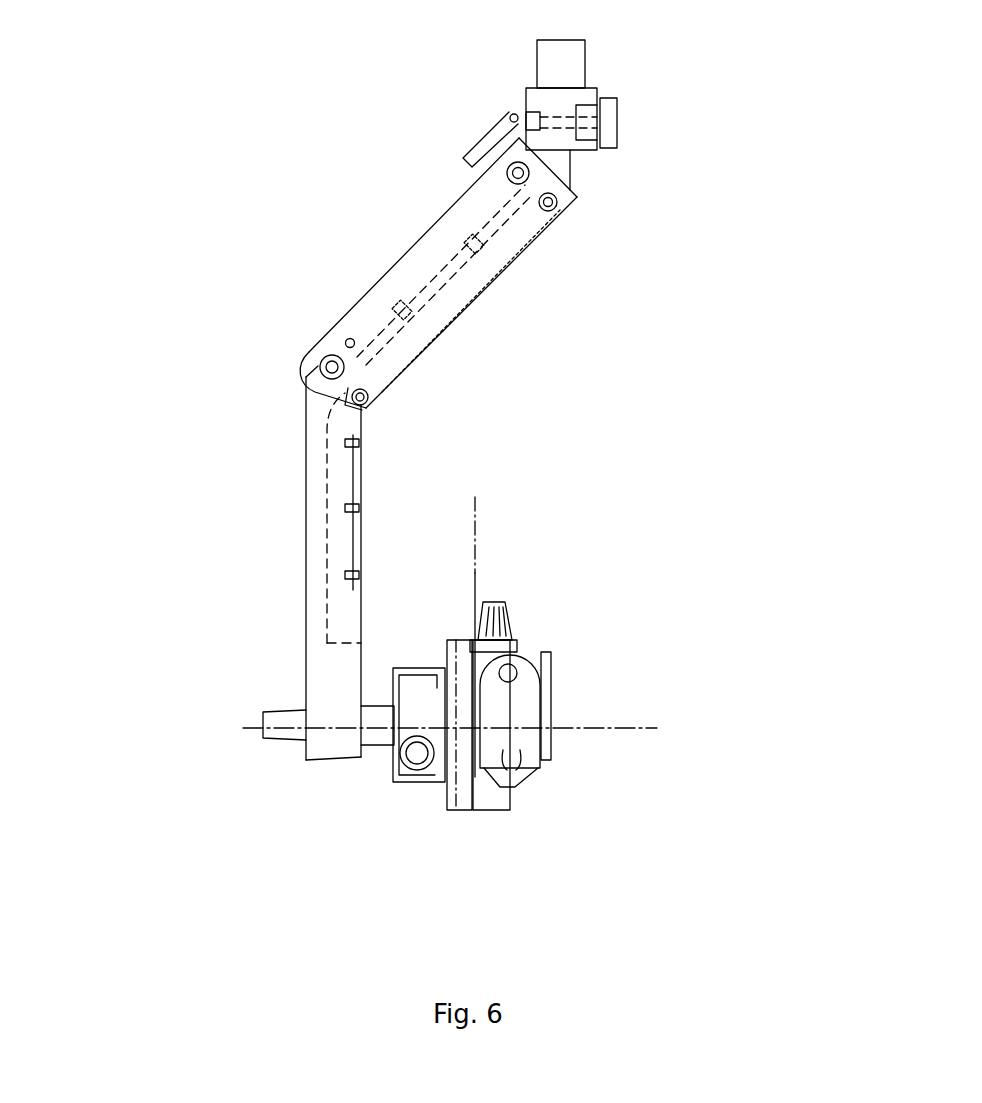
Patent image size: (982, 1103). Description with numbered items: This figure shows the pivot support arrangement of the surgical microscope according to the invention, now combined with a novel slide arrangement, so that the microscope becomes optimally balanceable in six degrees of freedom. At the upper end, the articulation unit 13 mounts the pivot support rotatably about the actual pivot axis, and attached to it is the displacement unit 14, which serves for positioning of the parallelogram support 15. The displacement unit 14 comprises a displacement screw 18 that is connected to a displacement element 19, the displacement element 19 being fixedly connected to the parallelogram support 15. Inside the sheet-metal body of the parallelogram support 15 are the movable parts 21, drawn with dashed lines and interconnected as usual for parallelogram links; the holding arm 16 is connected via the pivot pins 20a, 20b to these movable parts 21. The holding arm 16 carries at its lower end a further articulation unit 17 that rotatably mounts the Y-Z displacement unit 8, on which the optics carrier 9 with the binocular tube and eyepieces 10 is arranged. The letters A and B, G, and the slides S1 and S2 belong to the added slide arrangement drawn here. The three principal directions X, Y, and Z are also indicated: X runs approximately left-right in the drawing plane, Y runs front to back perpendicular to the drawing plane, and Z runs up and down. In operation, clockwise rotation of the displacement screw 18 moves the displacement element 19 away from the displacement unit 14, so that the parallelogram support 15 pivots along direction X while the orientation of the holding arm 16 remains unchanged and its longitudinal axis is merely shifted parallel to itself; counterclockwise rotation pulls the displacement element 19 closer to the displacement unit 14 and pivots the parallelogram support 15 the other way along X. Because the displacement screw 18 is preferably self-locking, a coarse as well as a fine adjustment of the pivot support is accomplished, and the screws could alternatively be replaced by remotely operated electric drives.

The Y-Z displacement unit 8 is at (489, 812).
The optics carrier 9 is at (513, 707).
The eyepieces 10 is at (512, 669).
The articulation unit 13 is at (543, 52).
The displacement unit 14 is at (578, 98).
The parallelogram support 15 is at (372, 323).
The holding arm 16 is at (340, 608).
The articulation unit 17 is at (156, 421).
The displacement screw 18 is at (605, 120).
The displacement element 19 is at (493, 155).
The pivot pin 20a is at (322, 362).
The pivot pin 20b is at (370, 392).
The movable parts 21 is at (362, 400).
The first slide S1 is at (407, 785).
The second slide S2 is at (518, 800).
The guide G is at (476, 722).
The axis A is at (655, 733).
The direction B is at (705, 522).
The X direction X is at (437, 932).
The Y direction Y is at (393, 628).
The Z direction Z is at (503, 452).